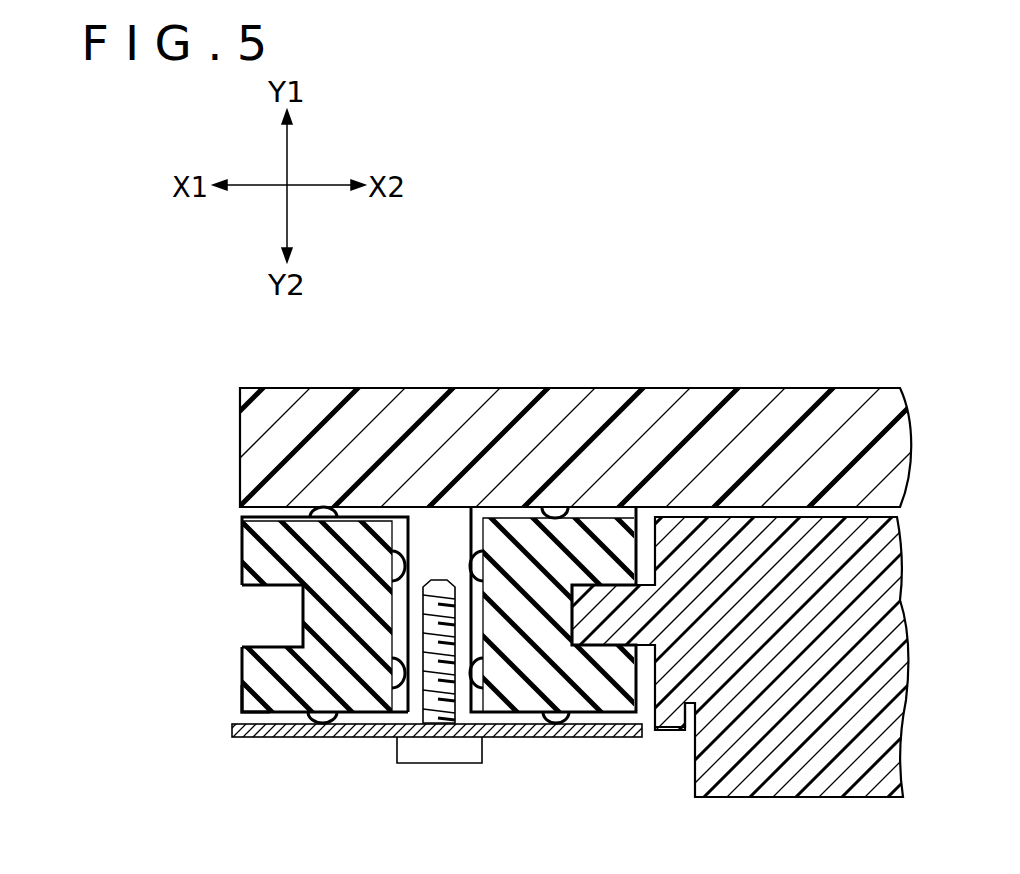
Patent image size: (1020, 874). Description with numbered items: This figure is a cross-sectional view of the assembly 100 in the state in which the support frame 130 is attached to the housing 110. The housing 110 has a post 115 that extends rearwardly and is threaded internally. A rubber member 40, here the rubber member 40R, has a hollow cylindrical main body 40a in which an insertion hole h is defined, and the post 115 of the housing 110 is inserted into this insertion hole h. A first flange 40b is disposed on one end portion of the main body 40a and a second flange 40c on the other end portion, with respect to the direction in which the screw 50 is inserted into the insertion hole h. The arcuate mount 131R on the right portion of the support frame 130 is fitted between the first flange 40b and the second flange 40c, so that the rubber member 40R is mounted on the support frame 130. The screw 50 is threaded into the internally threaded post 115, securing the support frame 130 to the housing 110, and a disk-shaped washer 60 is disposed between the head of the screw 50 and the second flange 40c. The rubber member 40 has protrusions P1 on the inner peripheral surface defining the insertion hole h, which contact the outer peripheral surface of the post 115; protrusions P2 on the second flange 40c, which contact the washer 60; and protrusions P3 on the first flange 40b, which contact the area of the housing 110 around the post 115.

The connector assembly 100 is at (749, 306).
The housing 110 is at (440, 388).
The support frame 130 is at (815, 798).
The arcuate mount 131R is at (655, 728).
The first flange 40b is at (242, 547).
The main body 40a is at (303, 617).
The second flange 40c is at (242, 657).
The rubber member 40R is at (243, 692).
The rubber member 40 is at (541, 610).
The insertion hole h is at (398, 628).
The protrusions P1 is at (392, 568).
The protrusions P2 is at (322, 716).
The protrusions P3 is at (325, 512).
The post 115 is at (460, 702).
The washer 60 is at (582, 738).
The screw 50 is at (432, 764).